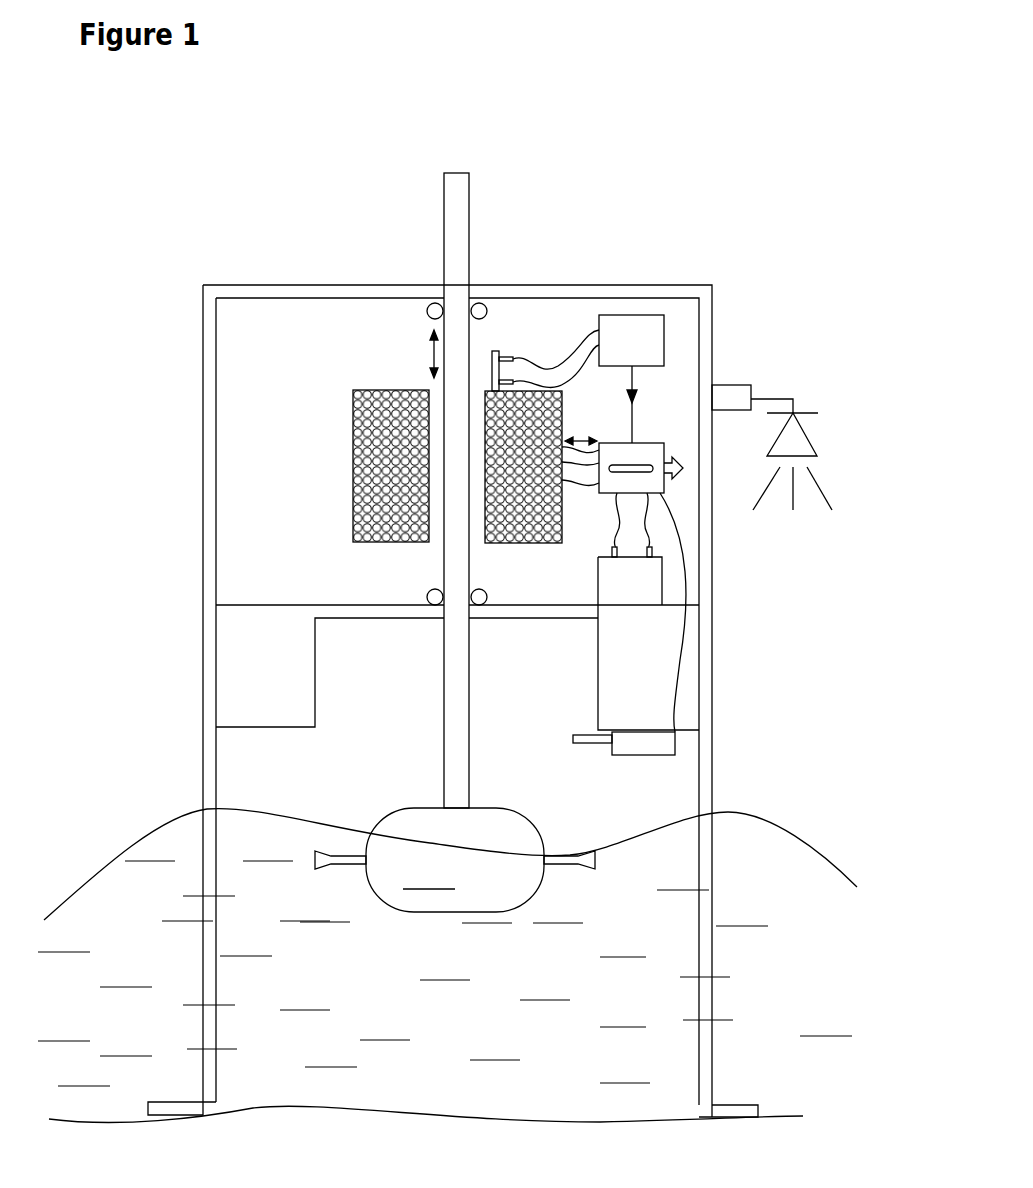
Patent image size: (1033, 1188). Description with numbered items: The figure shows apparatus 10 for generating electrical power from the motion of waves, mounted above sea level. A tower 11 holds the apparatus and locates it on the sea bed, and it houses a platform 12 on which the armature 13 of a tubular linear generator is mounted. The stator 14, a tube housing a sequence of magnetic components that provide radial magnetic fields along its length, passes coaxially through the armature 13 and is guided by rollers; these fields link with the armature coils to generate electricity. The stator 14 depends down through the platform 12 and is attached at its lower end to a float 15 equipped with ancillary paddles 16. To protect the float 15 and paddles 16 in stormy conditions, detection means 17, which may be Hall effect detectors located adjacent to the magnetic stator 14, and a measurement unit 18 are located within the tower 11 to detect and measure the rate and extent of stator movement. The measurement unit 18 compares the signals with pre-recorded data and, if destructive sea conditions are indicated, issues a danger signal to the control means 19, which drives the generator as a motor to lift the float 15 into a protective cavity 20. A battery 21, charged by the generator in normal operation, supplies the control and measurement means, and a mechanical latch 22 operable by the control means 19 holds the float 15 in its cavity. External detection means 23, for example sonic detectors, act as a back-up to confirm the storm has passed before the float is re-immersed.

The apparatus for generating electrical power 10 is at (323, 350).
The tower 11 is at (203, 468).
The platform 12 is at (270, 652).
The armature 13 is at (353, 502).
The stator 14 is at (460, 172).
The float 15 is at (418, 808).
The ancillary paddles 16 is at (578, 858).
The detection means 17 is at (498, 350).
The measurement unit 18 is at (633, 315).
The control means 19 is at (652, 478).
The protective cavity 20 is at (481, 635).
The battery 21 is at (643, 582).
The mechanical latch 22 is at (675, 755).
The external detection means 23 is at (807, 433).